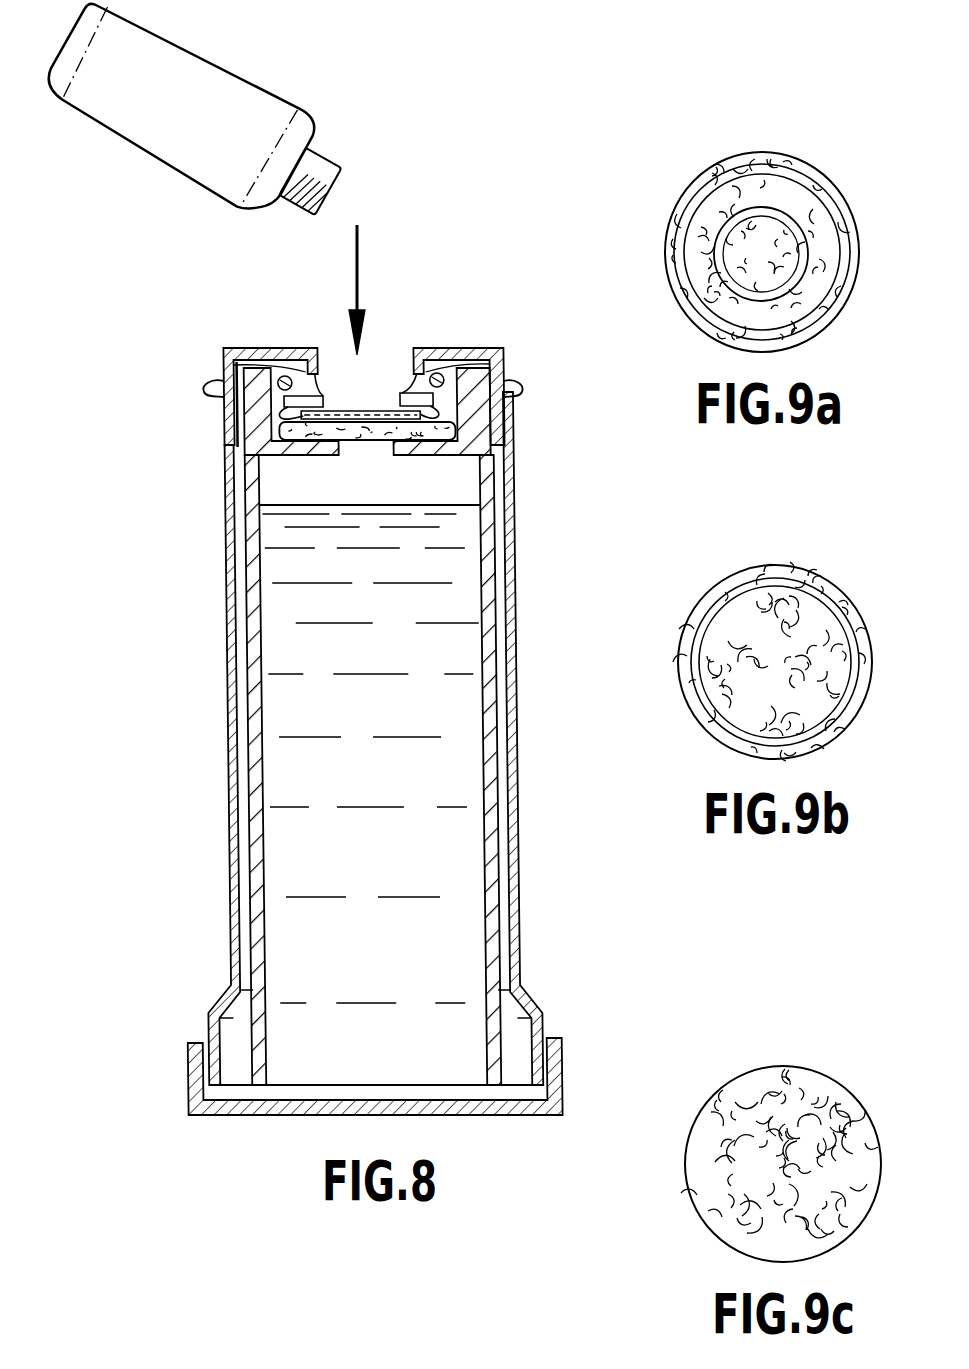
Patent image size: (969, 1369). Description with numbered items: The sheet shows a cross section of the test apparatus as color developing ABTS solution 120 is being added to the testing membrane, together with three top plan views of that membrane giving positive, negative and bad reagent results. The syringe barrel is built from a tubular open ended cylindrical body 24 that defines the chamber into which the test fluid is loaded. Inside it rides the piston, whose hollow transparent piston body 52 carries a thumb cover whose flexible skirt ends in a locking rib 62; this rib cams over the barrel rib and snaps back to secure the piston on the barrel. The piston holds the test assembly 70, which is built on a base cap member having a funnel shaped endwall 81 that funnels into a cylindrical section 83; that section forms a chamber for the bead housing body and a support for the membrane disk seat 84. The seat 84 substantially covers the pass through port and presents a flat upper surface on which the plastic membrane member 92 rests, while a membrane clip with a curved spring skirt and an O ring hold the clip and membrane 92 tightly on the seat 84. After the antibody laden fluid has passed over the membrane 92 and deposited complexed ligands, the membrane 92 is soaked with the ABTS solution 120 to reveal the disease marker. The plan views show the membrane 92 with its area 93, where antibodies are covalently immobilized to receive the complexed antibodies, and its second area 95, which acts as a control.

In FIG. 8, the ABTS solution 120 is at (223, 129).
In FIG. 8, the test assembly 70 is at (210, 425).
In FIG. 8, the funnel shaped endwall 81 is at (285, 363).
In FIG. 8, the cylindrical section 83 is at (321, 368).
In FIG. 8, the membrane disk seat 84 is at (353, 411).
In FIG. 8, the membrane member 92 is at (391, 422).
In FIG. 9a, the membrane member 92 is at (768, 153).
In FIG. 9b, the membrane member 92 is at (788, 573).
In FIG. 9c, the membrane member 92 is at (777, 1107).
In FIG. 8, the piston body 52 is at (248, 516).
In FIG. 8, the cylindrical body 24 is at (229, 544).
In FIG. 8, the locking rib 62 is at (540, 1040).
In FIG. 9a, the control area 95 is at (697, 187).
In FIG. 9b, the control area 95 is at (717, 600).
In FIG. 9a, the immobilized antibody area 93 is at (732, 251).